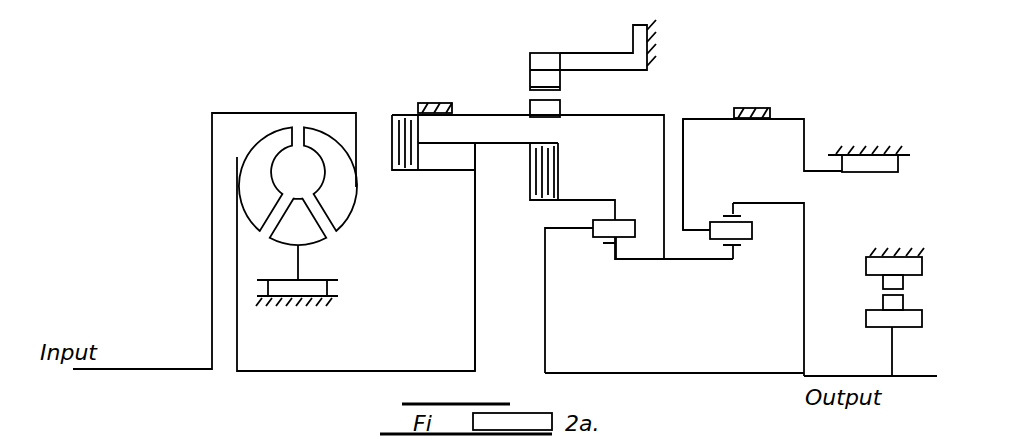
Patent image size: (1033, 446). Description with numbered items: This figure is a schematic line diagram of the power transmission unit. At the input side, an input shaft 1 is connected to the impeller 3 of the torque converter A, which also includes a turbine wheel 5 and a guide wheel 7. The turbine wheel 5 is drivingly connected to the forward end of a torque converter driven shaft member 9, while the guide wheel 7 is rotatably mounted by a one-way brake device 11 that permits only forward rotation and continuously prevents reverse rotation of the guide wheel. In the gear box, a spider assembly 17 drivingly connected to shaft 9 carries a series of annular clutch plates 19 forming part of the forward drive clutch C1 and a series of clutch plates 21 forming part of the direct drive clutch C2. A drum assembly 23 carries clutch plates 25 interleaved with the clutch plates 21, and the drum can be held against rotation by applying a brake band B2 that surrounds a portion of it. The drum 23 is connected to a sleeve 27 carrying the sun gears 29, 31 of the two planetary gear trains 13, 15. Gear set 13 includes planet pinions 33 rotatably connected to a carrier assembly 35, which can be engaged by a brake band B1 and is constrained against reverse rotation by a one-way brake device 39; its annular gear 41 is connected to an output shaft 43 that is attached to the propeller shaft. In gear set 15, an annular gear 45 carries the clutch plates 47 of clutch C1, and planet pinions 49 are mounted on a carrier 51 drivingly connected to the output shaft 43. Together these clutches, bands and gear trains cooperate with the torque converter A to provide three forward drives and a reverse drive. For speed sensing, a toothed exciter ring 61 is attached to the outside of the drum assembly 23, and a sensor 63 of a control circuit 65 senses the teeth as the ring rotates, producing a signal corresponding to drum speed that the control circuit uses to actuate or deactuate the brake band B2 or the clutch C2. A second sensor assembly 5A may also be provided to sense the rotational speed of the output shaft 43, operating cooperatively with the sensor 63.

The input shaft 1 is at (172, 370).
The impeller 3 is at (318, 137).
The turbine wheel 5 is at (262, 160).
The guide wheel 7 is at (288, 232).
The torque converter driven shaft member 9 is at (284, 369).
The one-way brake device 11 is at (327, 288).
The planetary gear train 13 is at (748, 198).
The planetary gear train 15 is at (638, 210).
The spider assembly 17 is at (475, 267).
The clutch plates 19 is at (558, 160).
The clutch plates 21 is at (398, 171).
The drum assembly 23 is at (490, 115).
The clutch plates 25 is at (392, 132).
The sleeve 27 is at (785, 118).
The sun gear 29 is at (735, 250).
The sun gear 31 is at (610, 245).
The planet pinions 33 is at (753, 230).
The carrier assembly 35 is at (683, 145).
The one-way brake device 39 is at (897, 175).
The annular gear 41 is at (730, 216).
The output shaft 43 is at (857, 357).
The annular gear 45 is at (615, 214).
The clutch plates 47 is at (537, 186).
The planet pinions 49 is at (633, 238).
The carrier 51 is at (545, 311).
The toothed exciter ring 61 is at (550, 110).
The sensor 63 is at (542, 87).
The control circuit 65 is at (562, 75).
The torque converter A is at (290, 98).
The brake band B1 is at (752, 108).
The brake band B2 is at (435, 102).
The forward drive clutch C1 is at (560, 146).
The direct drive clutch C2 is at (424, 151).
The second sensor assembly 5A is at (865, 298).